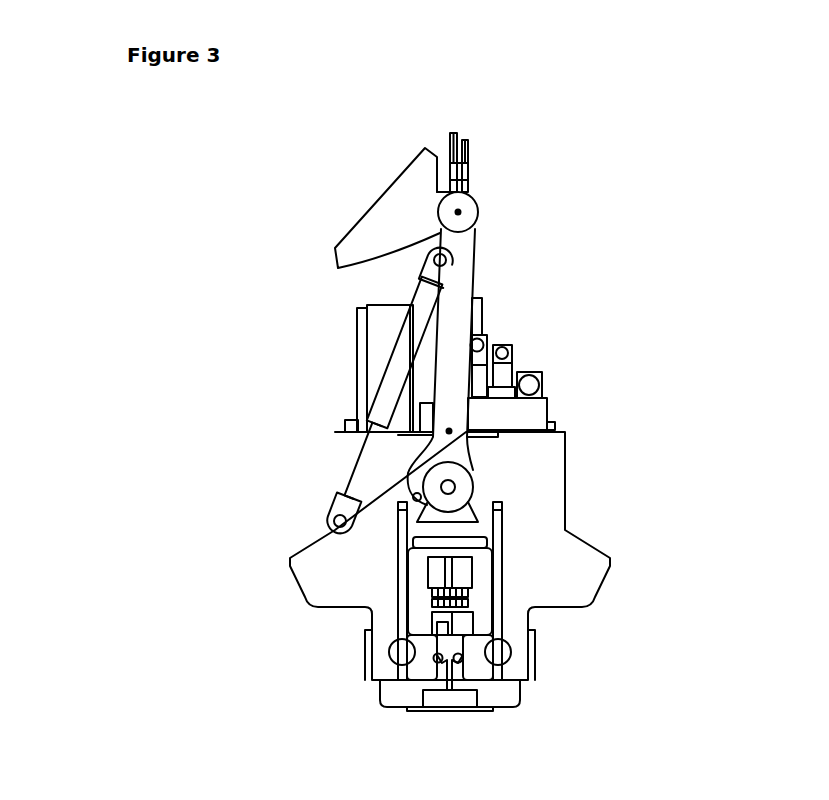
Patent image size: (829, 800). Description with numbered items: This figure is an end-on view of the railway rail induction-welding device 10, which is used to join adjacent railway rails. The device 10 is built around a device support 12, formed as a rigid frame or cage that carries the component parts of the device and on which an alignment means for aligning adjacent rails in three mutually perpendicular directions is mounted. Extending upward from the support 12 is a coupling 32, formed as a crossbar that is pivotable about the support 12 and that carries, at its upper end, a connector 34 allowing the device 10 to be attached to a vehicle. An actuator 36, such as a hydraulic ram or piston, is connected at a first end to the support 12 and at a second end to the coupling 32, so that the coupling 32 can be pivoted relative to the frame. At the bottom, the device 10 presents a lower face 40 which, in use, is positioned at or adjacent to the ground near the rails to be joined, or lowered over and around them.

The railway rail induction-welding device 10 is at (230, 185).
The device support 12 is at (568, 478).
The coupling 32 is at (476, 190).
The connector 34 is at (453, 133).
The actuator 36 is at (395, 355).
The lower face 40 is at (465, 725).